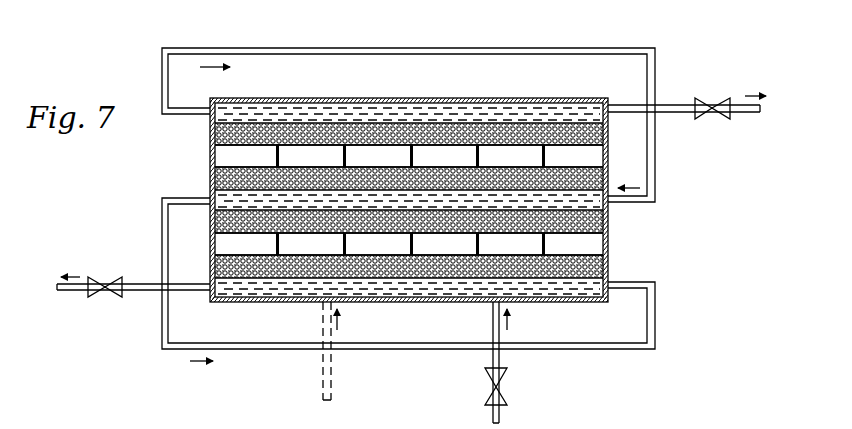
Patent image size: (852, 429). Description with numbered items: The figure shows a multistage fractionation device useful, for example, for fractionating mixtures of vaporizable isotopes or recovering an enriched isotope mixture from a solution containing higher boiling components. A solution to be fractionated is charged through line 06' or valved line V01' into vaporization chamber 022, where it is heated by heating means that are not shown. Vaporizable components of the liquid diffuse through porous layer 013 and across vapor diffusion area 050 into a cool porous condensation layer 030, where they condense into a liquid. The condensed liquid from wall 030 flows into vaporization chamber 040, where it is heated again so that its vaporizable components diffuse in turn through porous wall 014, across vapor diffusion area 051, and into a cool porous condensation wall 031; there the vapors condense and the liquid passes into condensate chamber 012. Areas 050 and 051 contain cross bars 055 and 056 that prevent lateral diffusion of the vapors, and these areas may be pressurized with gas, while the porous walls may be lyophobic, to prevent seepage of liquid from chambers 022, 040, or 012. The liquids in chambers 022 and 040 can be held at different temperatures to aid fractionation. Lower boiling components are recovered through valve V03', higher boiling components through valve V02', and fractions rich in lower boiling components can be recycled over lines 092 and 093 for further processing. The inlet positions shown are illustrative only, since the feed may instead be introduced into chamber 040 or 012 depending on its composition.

The recycle line 092 is at (600, 47).
The recycle line 093 is at (165, 262).
The condensate chamber 012 is at (388, 100).
The cool porous condensation wall 031 is at (211, 133).
The porous wall 014 is at (213, 177).
The vapor diffusion area 051 is at (228, 156).
The cross bars 056 is at (410, 155).
The vaporization chamber 040 is at (216, 204).
The cool porous condensation layer 030 is at (608, 222).
The vapor diffusion area 050 is at (592, 240).
The cross bars 055 is at (480, 245).
The porous layer 013 is at (608, 262).
The vaporization chamber 022 is at (280, 298).
The valve V03' is at (687, 120).
The valve V02' is at (133, 301).
The valved line V01' is at (525, 362).
The inlet line 06' is at (304, 351).